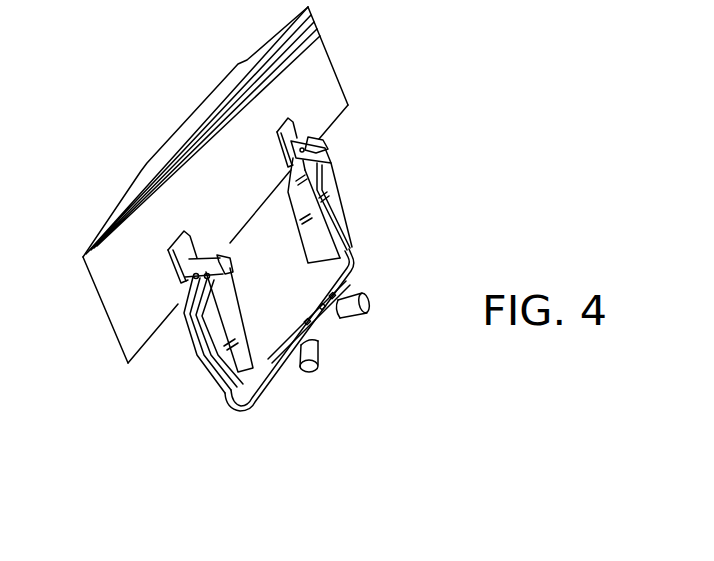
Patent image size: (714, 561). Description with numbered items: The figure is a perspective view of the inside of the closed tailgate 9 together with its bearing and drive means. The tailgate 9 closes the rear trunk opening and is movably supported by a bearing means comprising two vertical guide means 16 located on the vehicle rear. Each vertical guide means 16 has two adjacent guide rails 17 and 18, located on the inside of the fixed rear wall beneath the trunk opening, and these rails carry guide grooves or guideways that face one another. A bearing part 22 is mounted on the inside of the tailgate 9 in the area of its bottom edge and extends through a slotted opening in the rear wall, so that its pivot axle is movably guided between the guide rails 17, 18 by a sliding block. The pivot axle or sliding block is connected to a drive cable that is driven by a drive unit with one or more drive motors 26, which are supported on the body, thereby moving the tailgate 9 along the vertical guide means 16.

The tailgate 9 is at (192, 168).
The vertical guide means 16 is at (250, 290).
The guide rail 17 is at (345, 218).
The guide rail 18 is at (304, 236).
The bearing part 22 is at (182, 266).
The drive motor 26 is at (346, 313).